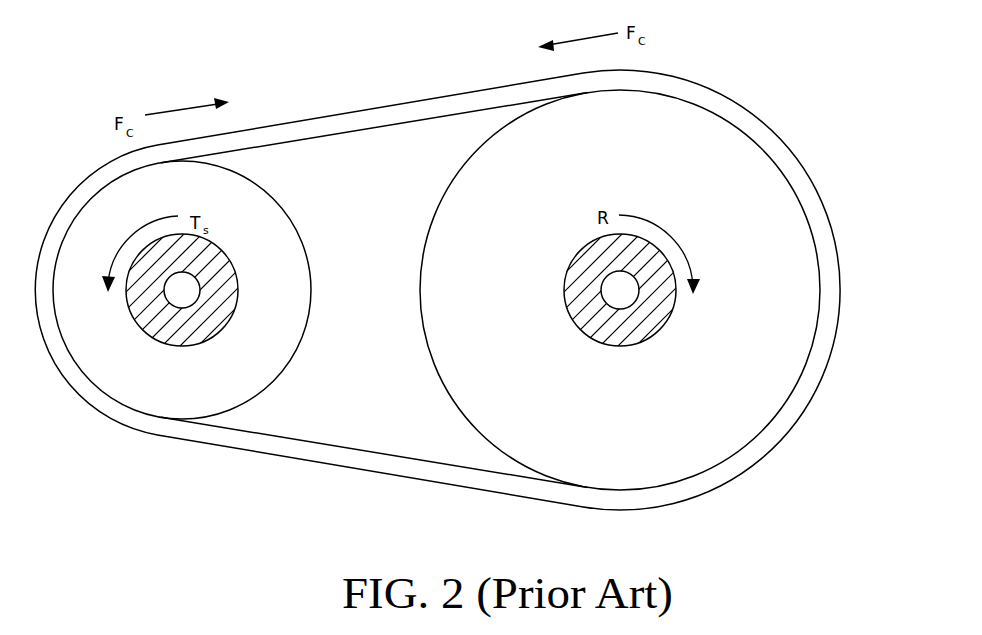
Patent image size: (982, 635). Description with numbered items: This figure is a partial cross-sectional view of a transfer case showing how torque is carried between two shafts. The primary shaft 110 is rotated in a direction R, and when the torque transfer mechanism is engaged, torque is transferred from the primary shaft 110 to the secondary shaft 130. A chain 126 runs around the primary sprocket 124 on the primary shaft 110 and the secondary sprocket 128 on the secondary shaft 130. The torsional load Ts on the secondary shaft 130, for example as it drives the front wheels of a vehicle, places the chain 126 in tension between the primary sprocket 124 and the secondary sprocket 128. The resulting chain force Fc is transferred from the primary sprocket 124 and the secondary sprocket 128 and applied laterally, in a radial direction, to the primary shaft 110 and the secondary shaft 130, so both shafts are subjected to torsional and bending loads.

The primary shaft 110 is at (567, 297).
The primary sprocket 124 is at (477, 430).
The chain 126 is at (368, 110).
The secondary sprocket 128 is at (247, 400).
The secondary shaft 130 is at (222, 257).